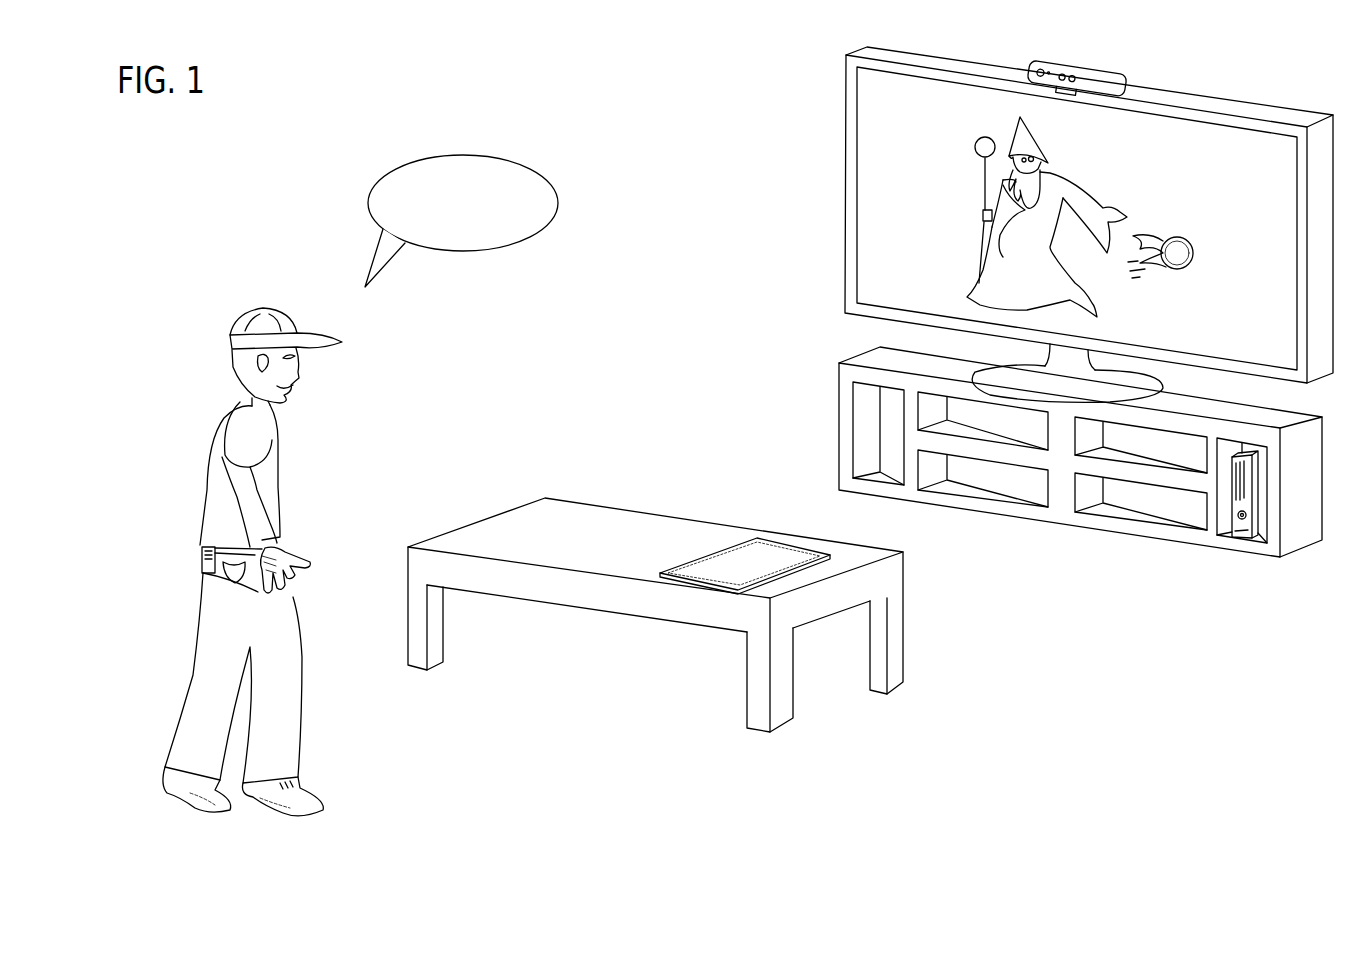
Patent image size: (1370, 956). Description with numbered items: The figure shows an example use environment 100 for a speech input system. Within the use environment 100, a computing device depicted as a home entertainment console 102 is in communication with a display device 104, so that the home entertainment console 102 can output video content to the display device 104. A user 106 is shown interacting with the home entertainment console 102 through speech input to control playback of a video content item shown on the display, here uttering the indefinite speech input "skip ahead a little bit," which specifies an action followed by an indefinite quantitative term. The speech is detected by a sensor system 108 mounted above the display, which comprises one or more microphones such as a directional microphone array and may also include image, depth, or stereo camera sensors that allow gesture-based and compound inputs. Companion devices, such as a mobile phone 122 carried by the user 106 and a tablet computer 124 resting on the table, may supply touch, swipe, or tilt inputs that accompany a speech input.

The use environment 100 is at (638, 104).
The home entertainment console 102 is at (1240, 537).
The display device 104 is at (1213, 108).
The user 106 is at (213, 432).
The sensor system 108 is at (1125, 68).
The mobile phone 122 is at (200, 555).
The tablet computer 124 is at (710, 552).